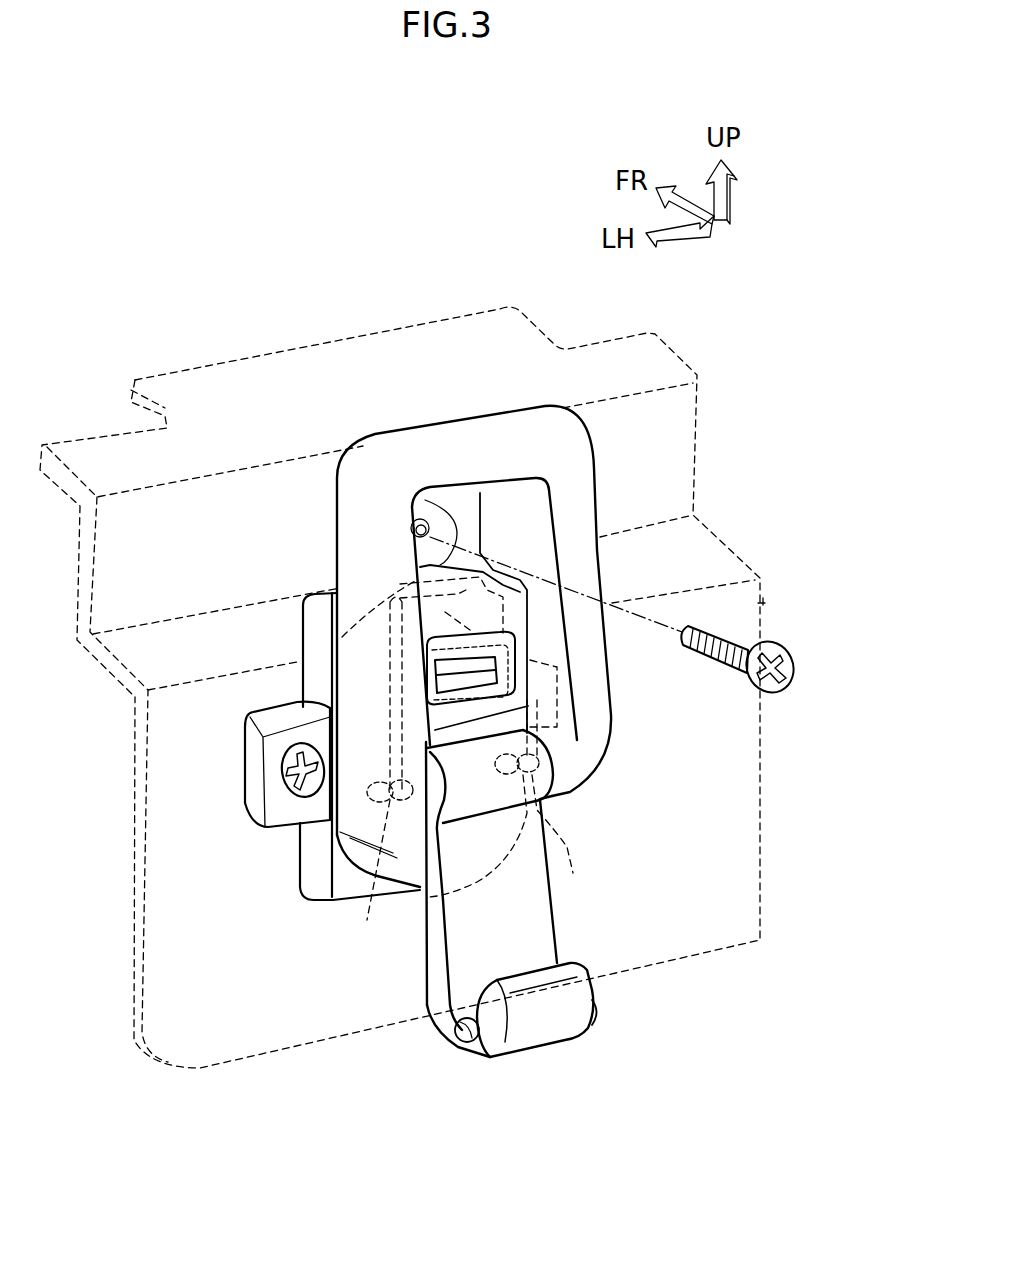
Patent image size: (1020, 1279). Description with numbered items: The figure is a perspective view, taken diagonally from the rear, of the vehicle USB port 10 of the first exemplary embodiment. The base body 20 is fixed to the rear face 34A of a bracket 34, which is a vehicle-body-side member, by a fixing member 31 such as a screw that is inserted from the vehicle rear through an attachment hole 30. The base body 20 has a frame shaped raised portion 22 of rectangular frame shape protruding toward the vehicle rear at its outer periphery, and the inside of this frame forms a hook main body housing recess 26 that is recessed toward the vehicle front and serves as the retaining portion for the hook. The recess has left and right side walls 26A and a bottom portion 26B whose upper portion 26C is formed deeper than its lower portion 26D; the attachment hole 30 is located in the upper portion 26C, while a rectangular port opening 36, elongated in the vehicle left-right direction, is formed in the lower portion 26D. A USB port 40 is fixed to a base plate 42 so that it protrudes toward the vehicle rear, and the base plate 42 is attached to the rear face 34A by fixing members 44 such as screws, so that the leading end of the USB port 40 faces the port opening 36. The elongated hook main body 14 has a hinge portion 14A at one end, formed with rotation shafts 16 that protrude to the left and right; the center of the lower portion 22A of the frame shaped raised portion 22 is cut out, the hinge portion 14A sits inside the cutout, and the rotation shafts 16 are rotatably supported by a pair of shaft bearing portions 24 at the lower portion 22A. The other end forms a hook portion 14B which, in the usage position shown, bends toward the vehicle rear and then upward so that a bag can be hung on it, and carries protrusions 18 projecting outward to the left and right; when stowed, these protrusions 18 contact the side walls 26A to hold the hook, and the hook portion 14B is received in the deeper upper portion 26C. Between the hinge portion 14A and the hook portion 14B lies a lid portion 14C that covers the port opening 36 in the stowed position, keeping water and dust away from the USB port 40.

The vehicle USB port 10 is at (515, 373).
The hook main body 14 is at (510, 928).
The hinge portion 14A is at (543, 742).
The hook portion 14B is at (540, 1047).
The lid portion 14C is at (513, 933).
The rotation shafts 16 is at (478, 775).
The protrusions 18 is at (467, 1042).
The base body 20 is at (593, 483).
The frame shaped raised portion 22 is at (465, 467).
The lower portion 22A is at (567, 753).
The shaft bearing portions 24 is at (378, 785).
The hook main body housing recess 26 is at (505, 541).
The side walls 26A is at (510, 513).
The bottom portion 26B is at (511, 610).
The upper portion 26C is at (463, 513).
The lower portion 26D is at (513, 707).
The attachment hole 30 is at (412, 547).
The fixing member 31 is at (772, 693).
The bracket 34 is at (720, 503).
The rear face 34A is at (768, 603).
The port opening 36 is at (492, 660).
The USB port 40 is at (460, 676).
The base plate 42 is at (297, 900).
The fixing members 44 is at (277, 823).